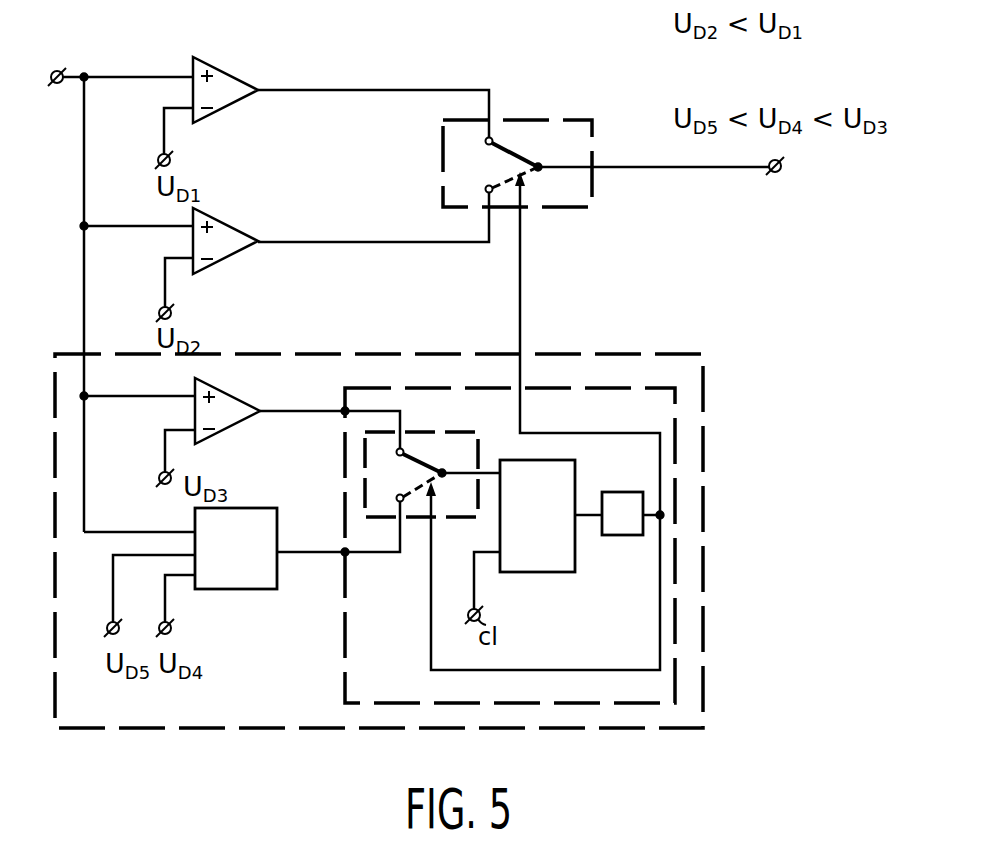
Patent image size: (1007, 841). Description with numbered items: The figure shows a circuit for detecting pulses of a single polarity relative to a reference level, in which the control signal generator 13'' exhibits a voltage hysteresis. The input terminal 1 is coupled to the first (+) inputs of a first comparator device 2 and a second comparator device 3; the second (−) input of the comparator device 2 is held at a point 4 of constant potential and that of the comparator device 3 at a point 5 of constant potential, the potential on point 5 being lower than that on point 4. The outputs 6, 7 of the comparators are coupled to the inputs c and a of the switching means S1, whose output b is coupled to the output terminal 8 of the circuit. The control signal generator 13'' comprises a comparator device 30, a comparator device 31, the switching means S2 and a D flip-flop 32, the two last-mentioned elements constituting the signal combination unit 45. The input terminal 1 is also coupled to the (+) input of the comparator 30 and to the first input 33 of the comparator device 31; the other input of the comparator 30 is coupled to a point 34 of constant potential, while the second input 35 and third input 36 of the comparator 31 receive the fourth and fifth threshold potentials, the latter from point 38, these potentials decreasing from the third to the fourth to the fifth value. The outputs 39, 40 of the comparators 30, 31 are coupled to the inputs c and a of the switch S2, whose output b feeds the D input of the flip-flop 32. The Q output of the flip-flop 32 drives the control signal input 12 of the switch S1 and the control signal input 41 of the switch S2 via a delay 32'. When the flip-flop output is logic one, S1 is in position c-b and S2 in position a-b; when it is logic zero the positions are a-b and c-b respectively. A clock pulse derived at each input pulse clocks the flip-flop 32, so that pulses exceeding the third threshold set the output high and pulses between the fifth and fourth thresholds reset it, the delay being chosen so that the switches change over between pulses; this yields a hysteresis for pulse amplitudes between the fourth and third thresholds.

The input terminal 1 is at (54, 67).
The first comparator device 2 is at (226, 67).
The second comparator device 3 is at (236, 203).
The point of constant potential 4 is at (160, 152).
The point of constant potential 5 is at (160, 308).
The output of the first comparator device 6 is at (341, 96).
The output of the second comparator device 7 is at (341, 246).
The output terminal 8 is at (777, 179).
The control signal input of switch S1 12 is at (522, 205).
The control signal generator 13'' is at (409, 541).
The comparator device 30 is at (243, 374).
The comparator device 31 is at (251, 507).
The D flip-flop 32 is at (381, 542).
The delay 32' is at (633, 498).
The first input of the second comparator device 33 is at (193, 530).
The point of constant potential 34 is at (161, 470).
The second input of comparator 31 35 is at (192, 573).
The third input of comparator 31 36 is at (190, 553).
The point of constant potential 38 is at (108, 622).
The output of comparator 30 39 is at (311, 418).
The output of comparator 31 40 is at (296, 555).
The control signal input of switch S2 41 is at (432, 515).
The signal combination unit 45 is at (677, 455).
The switching means S1 is at (540, 100).
The switching means S2 is at (425, 428).